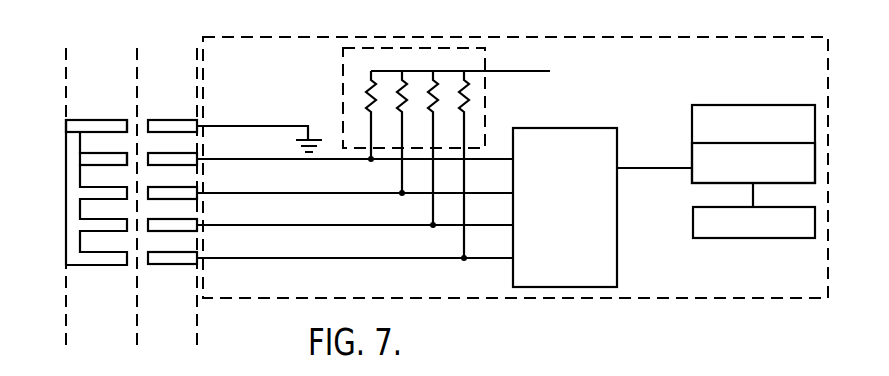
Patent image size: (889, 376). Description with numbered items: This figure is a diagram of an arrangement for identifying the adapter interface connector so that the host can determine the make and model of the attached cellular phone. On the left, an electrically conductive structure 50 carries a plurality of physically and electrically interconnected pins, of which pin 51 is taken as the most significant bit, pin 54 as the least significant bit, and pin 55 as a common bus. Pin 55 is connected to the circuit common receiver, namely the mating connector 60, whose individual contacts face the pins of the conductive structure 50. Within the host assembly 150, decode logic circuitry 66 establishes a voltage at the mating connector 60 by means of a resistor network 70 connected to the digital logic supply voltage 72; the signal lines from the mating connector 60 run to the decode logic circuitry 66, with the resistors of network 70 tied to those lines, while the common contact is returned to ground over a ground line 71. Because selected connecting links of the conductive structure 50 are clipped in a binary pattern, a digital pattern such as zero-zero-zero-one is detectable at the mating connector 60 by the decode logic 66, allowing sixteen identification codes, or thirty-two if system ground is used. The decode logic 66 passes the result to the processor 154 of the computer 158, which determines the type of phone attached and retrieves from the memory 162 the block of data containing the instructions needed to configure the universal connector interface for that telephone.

The electrically conductive structure 50 is at (103, 294).
The pin 51 is at (97, 264).
The pin 54 is at (90, 162).
The pin 55 is at (108, 120).
The mating connector 60 is at (172, 276).
The decode logic circuitry 66 is at (597, 170).
The resistor network 70 is at (337, 72).
The ground line 71 is at (243, 126).
The digital logic supply voltage 72 is at (550, 71).
The host assembly 150 is at (637, 300).
The processor 154 is at (692, 183).
The computer 158 is at (752, 105).
The memory 162 is at (757, 240).